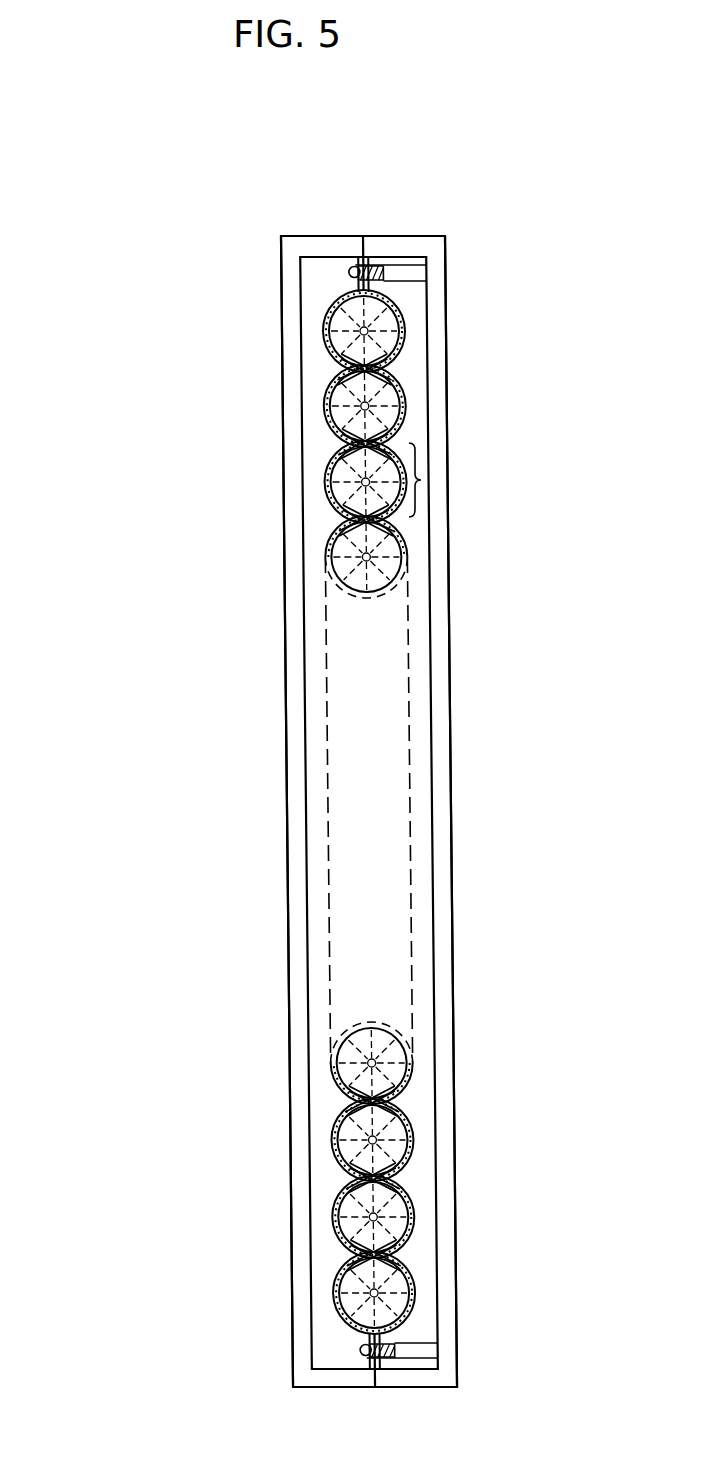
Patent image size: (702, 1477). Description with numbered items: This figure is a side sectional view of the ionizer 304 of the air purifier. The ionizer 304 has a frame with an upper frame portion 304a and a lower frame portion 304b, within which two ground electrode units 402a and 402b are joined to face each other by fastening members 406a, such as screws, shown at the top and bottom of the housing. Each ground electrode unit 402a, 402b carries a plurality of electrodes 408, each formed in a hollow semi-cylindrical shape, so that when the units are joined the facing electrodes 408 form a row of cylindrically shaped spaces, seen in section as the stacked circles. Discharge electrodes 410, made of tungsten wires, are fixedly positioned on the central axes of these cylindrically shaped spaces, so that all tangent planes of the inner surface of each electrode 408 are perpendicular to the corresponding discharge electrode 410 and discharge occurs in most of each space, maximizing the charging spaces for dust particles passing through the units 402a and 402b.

The ionizer 304 is at (108, 265).
The upper frame portion 304a is at (348, 242).
The lower frame portion 304b is at (377, 242).
The ground electrode unit 402a is at (327, 398).
The ground electrode unit 402b is at (405, 398).
The fastening member 406a is at (350, 281).
The electrode 408 is at (425, 480).
The discharge electrode 410 is at (388, 375).